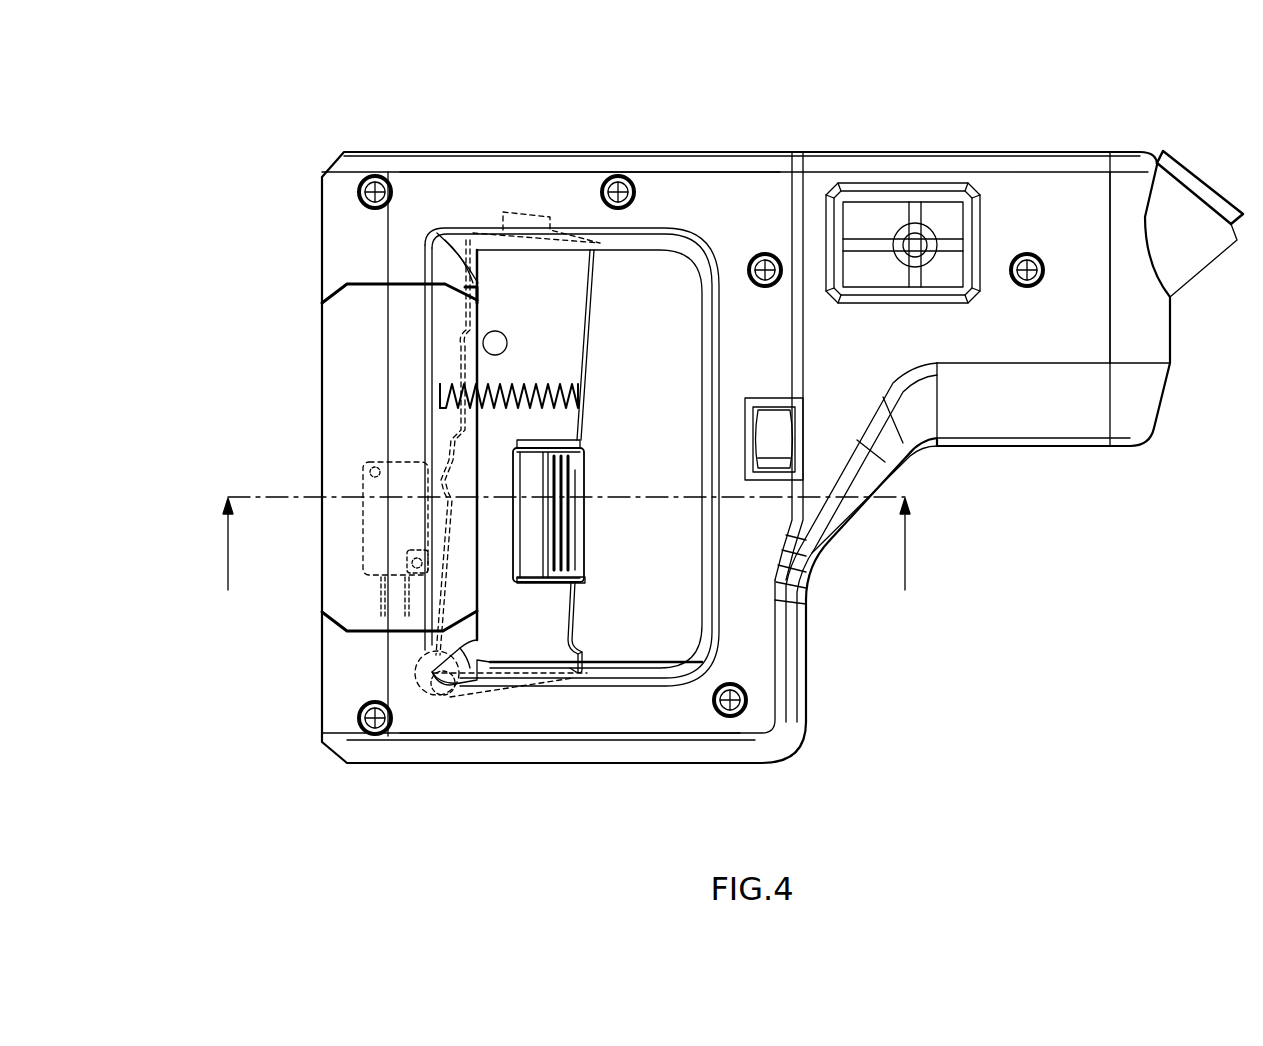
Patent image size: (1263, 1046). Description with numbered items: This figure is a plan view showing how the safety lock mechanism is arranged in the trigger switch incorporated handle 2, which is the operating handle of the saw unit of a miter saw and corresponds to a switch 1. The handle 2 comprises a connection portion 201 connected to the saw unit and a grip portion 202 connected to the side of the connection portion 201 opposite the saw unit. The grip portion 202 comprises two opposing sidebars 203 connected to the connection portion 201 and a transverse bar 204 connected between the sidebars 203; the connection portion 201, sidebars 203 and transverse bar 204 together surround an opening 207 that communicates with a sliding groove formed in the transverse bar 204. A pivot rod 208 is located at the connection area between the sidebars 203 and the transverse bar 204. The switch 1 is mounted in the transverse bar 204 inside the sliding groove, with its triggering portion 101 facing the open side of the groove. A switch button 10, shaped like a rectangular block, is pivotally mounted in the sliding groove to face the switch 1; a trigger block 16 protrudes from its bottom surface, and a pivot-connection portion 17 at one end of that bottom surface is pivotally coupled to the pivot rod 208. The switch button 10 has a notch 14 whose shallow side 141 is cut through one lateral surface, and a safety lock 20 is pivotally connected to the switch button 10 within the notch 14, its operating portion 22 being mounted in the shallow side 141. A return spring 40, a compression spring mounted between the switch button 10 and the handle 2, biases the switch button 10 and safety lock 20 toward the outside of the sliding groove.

The trigger switch incorporated handle 2 is at (968, 153).
The connection portion 201 is at (1060, 200).
The grip portion 202 is at (658, 195).
The sidebars 203 is at (528, 752).
The transverse bar 204 is at (337, 333).
The opening 207 is at (682, 282).
The switch button 10 is at (531, 293).
The return spring 40 is at (443, 483).
The triggering portion 101 is at (438, 395).
The switch 1 is at (365, 465).
The trigger block 16 is at (427, 520).
The safety lock 20 is at (586, 530).
The operating portion 22 is at (583, 557).
The notch 14 is at (537, 585).
The shallow side 141 is at (576, 662).
The pivot rod 208 is at (455, 697).
The pivot-connection portion 17 is at (437, 673).